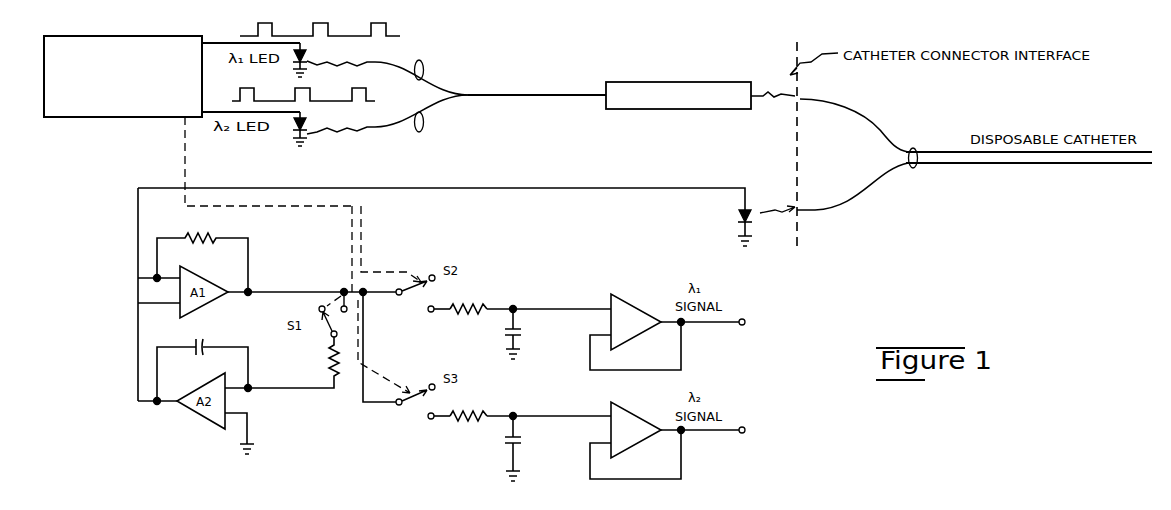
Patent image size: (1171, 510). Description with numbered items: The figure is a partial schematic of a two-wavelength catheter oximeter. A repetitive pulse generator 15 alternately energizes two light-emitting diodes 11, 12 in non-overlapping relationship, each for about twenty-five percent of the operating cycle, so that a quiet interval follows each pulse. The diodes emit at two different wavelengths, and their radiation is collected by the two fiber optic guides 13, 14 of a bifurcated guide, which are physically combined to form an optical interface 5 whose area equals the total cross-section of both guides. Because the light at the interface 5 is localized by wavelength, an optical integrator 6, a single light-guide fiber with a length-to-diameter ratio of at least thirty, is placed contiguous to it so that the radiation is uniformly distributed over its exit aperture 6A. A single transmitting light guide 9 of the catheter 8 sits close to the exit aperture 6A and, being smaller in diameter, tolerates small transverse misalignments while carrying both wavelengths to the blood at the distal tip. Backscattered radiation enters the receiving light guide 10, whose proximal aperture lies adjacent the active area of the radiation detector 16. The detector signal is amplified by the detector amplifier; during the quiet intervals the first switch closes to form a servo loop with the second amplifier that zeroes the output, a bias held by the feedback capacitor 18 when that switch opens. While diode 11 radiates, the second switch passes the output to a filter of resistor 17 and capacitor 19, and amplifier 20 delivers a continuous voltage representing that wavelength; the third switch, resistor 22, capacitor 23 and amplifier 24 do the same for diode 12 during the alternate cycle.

The optical interface 5 is at (600, 96).
The optical integrator 6 is at (672, 110).
The exit aperture 6A is at (754, 109).
The catheter 8 is at (912, 148).
The transmitting light guide 9 is at (1148, 152).
The receiving light guide 10 is at (1137, 163).
The light-emitting diode 11 is at (304, 52).
The light-emitting diode 12 is at (304, 121).
The fiber optic guide 13 is at (425, 68).
The fiber optic guide 14 is at (425, 124).
The repetitive pulse generator 15 is at (193, 18).
The radiation detector 16 is at (738, 216).
The resistor 17 is at (456, 305).
The feedback capacitor 18 is at (199, 341).
The capacitor 19 is at (521, 334).
The amplifier 20 is at (630, 338).
The resistor 22 is at (460, 412).
The capacitor 23 is at (522, 445).
The amplifier 24 is at (635, 442).